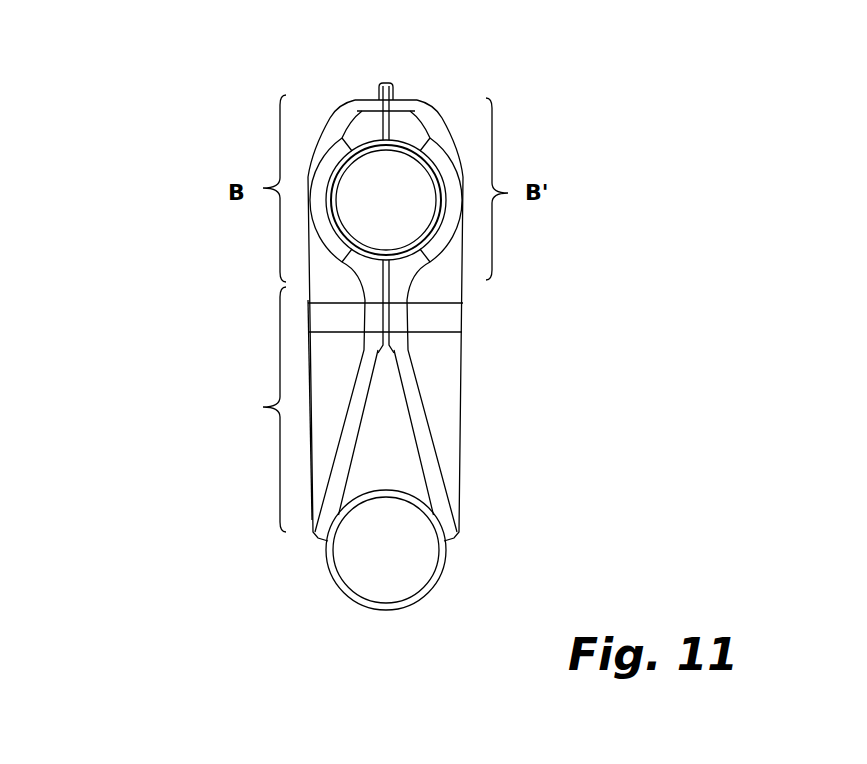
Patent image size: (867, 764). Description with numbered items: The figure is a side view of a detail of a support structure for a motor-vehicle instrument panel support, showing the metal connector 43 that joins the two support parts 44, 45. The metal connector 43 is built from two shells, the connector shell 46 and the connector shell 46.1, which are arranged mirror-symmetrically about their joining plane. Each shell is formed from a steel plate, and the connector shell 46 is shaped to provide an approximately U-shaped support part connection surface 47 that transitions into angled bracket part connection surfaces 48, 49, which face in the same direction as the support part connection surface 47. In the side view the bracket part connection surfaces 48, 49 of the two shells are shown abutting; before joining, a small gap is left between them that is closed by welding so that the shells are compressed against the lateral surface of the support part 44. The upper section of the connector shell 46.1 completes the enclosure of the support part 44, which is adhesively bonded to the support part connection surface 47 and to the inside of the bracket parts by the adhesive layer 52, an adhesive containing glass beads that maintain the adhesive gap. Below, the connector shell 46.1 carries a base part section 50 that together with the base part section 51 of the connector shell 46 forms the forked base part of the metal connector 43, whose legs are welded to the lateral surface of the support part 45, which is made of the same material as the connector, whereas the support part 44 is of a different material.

The metal connector 43 is at (246, 298).
The support part 44 is at (372, 158).
The support part 45 is at (329, 572).
The connector shell 46 is at (470, 408).
The connector shell 46.1 is at (306, 432).
The support part connection surface 47 is at (446, 176).
The bracket part connection surface 48 is at (383, 106).
The bracket part connection surface 49 is at (384, 312).
The base part section 50 is at (252, 409).
The base part section 51 is at (459, 452).
The adhesive layer 52 is at (375, 259).